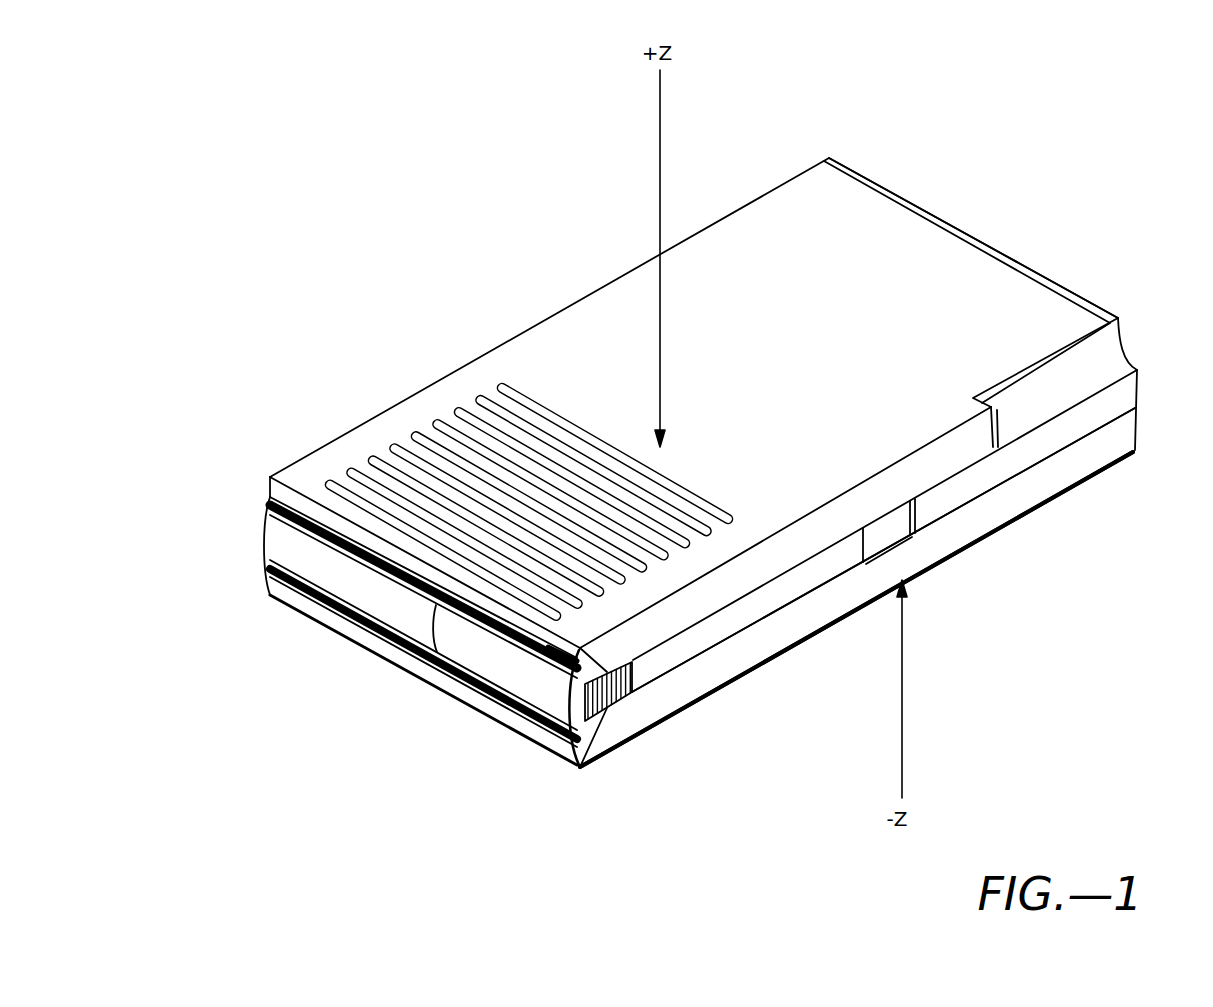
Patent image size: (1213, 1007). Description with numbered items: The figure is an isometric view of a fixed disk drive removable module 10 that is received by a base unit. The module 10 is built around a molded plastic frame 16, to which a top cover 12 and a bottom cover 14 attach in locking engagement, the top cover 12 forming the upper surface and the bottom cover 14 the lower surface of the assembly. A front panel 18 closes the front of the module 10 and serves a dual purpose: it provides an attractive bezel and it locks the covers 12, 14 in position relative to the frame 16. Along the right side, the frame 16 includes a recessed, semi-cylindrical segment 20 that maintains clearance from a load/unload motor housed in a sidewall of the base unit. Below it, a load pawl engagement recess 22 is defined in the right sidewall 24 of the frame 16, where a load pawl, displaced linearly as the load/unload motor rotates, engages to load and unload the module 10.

The module 10 is at (380, 741).
The top cover 12 is at (750, 238).
The bottom cover 14 is at (942, 545).
The frame 16 is at (1122, 402).
The front panel 18 is at (278, 538).
The recessed, semi-cylindrical segment 20 is at (1097, 353).
The load pawl engagement recess 22 is at (882, 537).
The right sidewall 24 is at (698, 638).